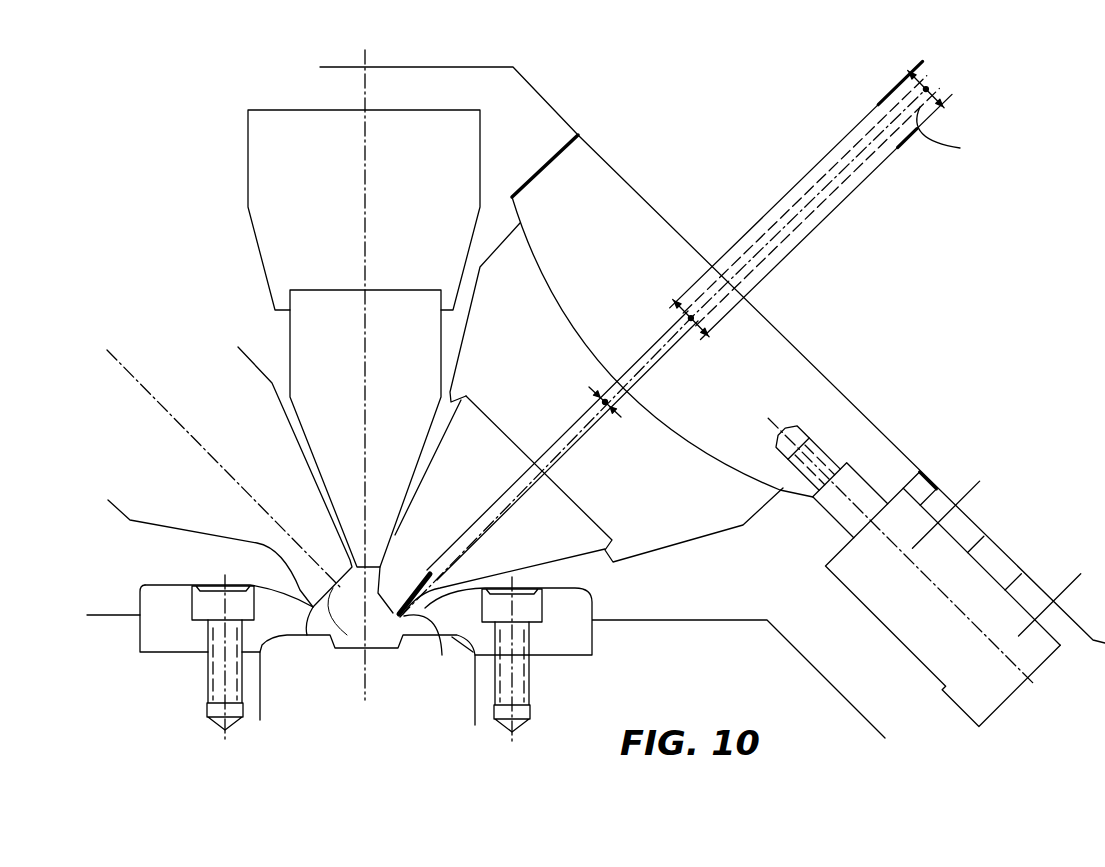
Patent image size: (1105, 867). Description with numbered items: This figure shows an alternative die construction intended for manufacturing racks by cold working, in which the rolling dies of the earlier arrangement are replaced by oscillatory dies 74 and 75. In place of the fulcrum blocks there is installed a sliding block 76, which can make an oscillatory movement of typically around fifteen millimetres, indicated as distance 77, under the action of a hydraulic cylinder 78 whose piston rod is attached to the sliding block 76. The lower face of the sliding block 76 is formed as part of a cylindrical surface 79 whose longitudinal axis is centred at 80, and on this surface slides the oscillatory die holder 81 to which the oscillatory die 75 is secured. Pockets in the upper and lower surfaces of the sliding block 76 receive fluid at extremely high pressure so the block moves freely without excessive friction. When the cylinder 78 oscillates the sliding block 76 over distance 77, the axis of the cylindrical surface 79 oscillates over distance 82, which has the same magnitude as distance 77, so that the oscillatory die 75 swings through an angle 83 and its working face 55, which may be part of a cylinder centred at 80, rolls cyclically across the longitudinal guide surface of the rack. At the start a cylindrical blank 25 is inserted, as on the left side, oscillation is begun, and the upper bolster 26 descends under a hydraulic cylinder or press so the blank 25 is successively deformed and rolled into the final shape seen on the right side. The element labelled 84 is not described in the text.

The cylindrical blank 25 is at (337, 602).
The upper bolster 26 is at (1003, 314).
The working face 55 is at (437, 637).
The oscillatory die 74 is at (160, 508).
The oscillatory die 75 is at (478, 412).
The sliding block 76 is at (825, 382).
The oscillatory movement distance 77 is at (693, 320).
The hydraulic cylinder 78 is at (843, 563).
The cylindrical surface 79 is at (532, 258).
The longitudinal axis centre 80 is at (935, 88).
The oscillatory die holder 81 is at (647, 540).
The axis oscillation distance 82 is at (958, 149).
The oscillation angle 83 is at (612, 415).
The nozzle tip 84 is at (393, 590).